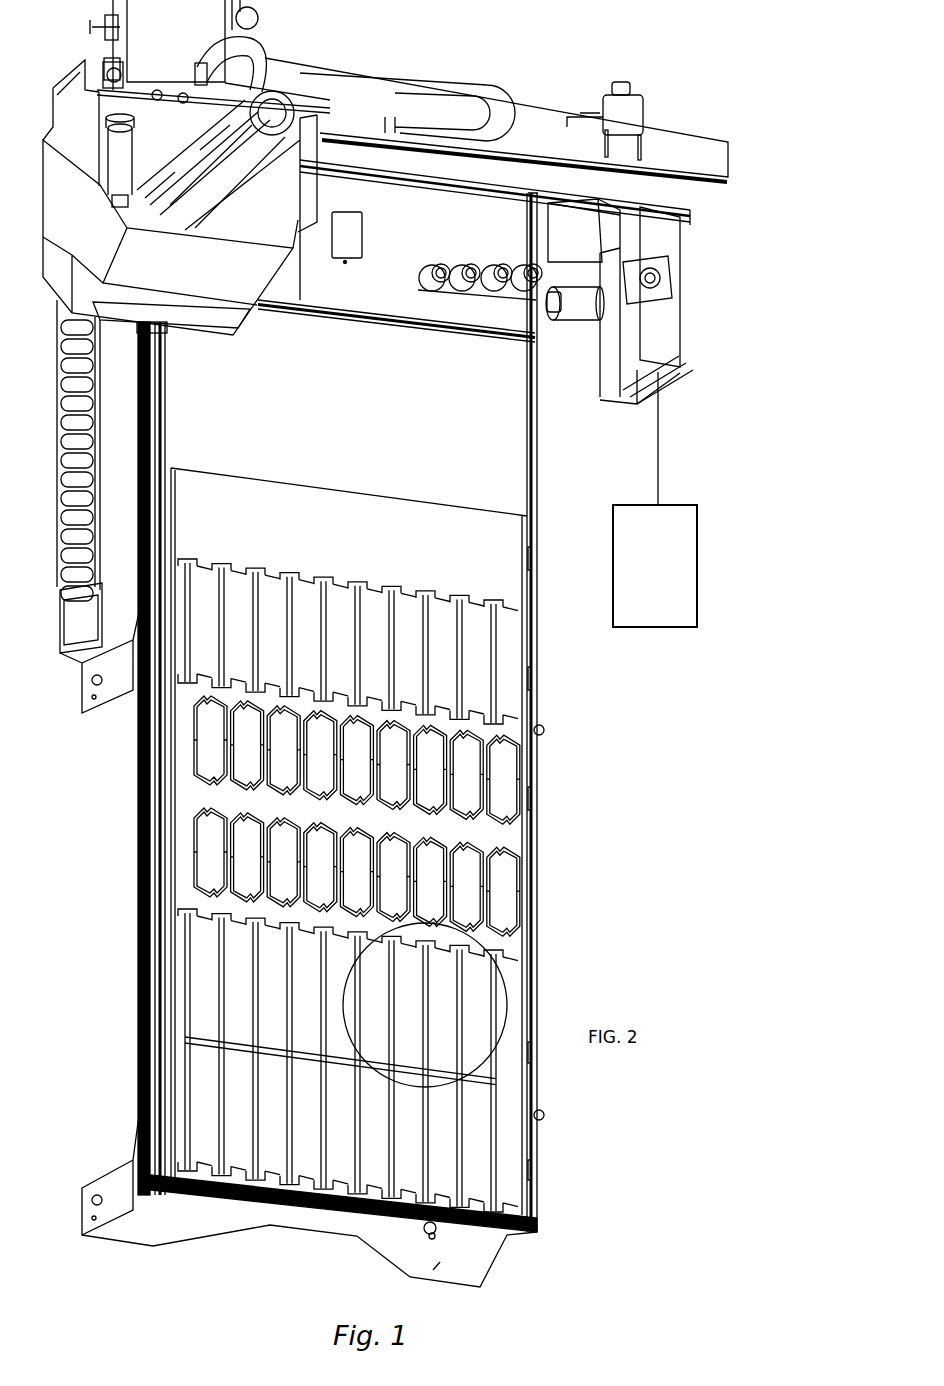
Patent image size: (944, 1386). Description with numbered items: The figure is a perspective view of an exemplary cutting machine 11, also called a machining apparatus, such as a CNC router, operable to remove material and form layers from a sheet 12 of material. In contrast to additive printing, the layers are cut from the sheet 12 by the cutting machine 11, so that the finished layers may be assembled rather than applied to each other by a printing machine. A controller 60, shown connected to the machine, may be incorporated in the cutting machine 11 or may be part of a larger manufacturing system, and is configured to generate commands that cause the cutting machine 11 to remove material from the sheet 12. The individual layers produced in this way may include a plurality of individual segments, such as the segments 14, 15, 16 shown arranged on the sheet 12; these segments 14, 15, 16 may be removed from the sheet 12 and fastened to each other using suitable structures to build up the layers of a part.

The cutting machine 11 is at (762, 74).
The sheet of material 12 is at (293, 468).
The segment 14 is at (500, 1132).
The segment 15 is at (508, 876).
The segment 16 is at (503, 651).
The controller 60 is at (655, 499).